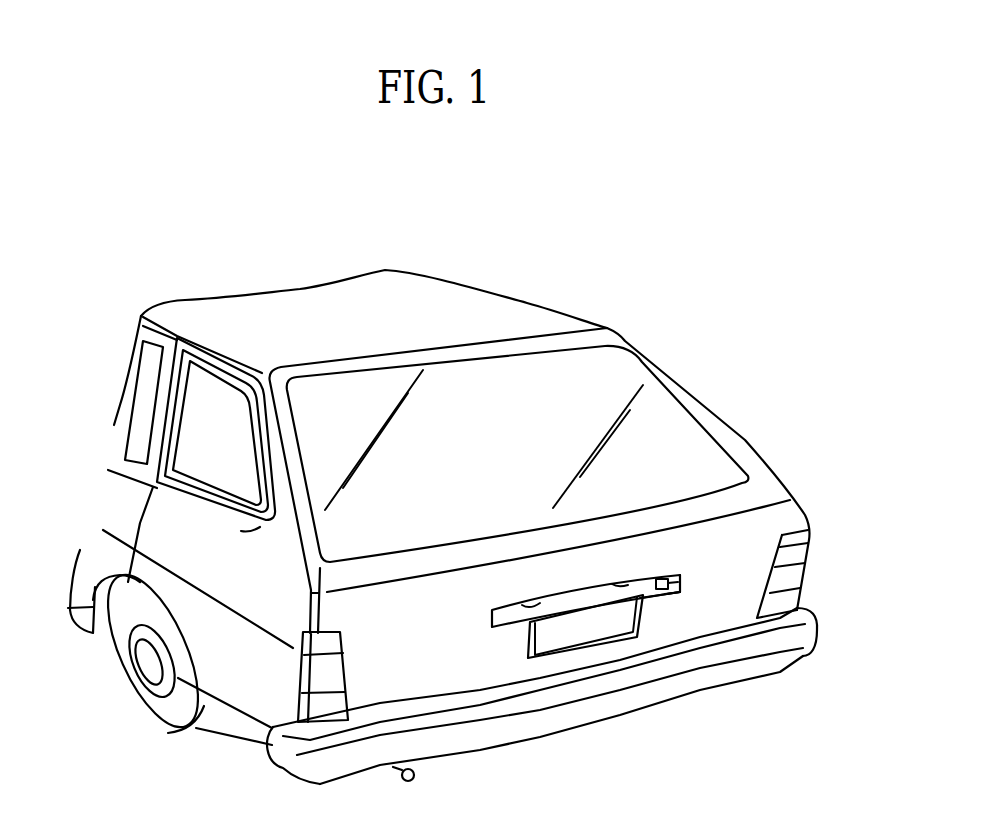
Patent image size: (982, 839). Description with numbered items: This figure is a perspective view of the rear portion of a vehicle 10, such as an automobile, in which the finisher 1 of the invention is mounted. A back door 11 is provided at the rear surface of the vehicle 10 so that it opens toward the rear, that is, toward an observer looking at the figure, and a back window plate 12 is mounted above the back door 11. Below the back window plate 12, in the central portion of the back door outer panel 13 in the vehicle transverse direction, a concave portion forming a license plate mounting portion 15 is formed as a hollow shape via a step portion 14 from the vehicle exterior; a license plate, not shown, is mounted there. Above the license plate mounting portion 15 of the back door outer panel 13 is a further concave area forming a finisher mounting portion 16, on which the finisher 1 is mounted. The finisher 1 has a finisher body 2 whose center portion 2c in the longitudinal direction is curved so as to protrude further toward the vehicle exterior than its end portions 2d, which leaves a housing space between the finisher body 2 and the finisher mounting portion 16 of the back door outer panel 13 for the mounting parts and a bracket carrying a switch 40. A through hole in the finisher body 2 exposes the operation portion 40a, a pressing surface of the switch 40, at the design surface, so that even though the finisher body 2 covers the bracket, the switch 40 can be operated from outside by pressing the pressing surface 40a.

The finisher 1 is at (502, 630).
The finisher body 2 is at (481, 691).
The center portion 2c is at (630, 578).
The end portions 2d is at (678, 582).
The vehicle 10 is at (597, 256).
The back door 11 is at (727, 414).
The back window plate 12 is at (622, 378).
The back door outer panel 13 is at (785, 518).
The step portion 14 is at (633, 618).
The license plate mounting portion 15 is at (548, 638).
The finisher mounting portion 16 is at (538, 600).
The switch 40 is at (675, 590).
The operation portion 40a is at (727, 670).